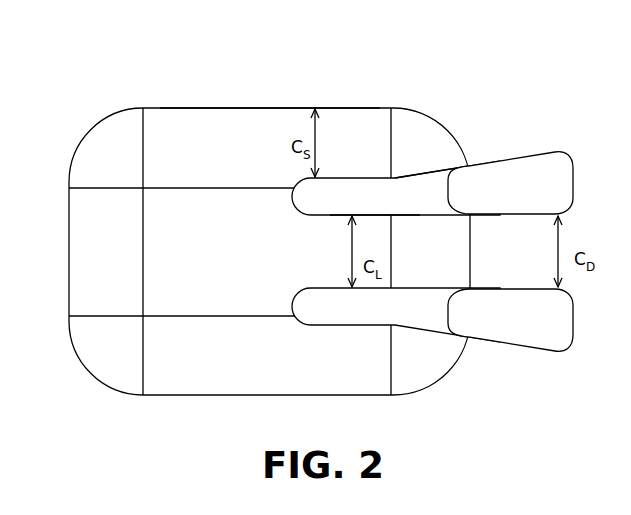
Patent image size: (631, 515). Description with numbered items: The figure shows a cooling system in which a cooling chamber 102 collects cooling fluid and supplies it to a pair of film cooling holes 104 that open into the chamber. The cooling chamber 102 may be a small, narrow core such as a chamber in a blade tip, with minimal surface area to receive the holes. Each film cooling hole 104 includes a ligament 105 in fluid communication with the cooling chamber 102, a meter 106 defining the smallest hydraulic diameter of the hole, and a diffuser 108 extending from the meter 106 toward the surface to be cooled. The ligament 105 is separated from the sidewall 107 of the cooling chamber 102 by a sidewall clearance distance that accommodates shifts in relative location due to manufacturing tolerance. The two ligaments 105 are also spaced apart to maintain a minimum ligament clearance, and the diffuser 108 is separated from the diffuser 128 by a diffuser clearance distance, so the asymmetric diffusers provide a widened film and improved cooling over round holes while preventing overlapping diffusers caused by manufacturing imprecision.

The cooling chamber 102 is at (168, 216).
The film cooling hole 104 is at (342, 192).
The ligament 105 is at (370, 193).
The meter 106 is at (398, 195).
The sidewall 107 is at (260, 107).
The diffuser 108 is at (522, 178).
The diffuser 128 is at (527, 328).